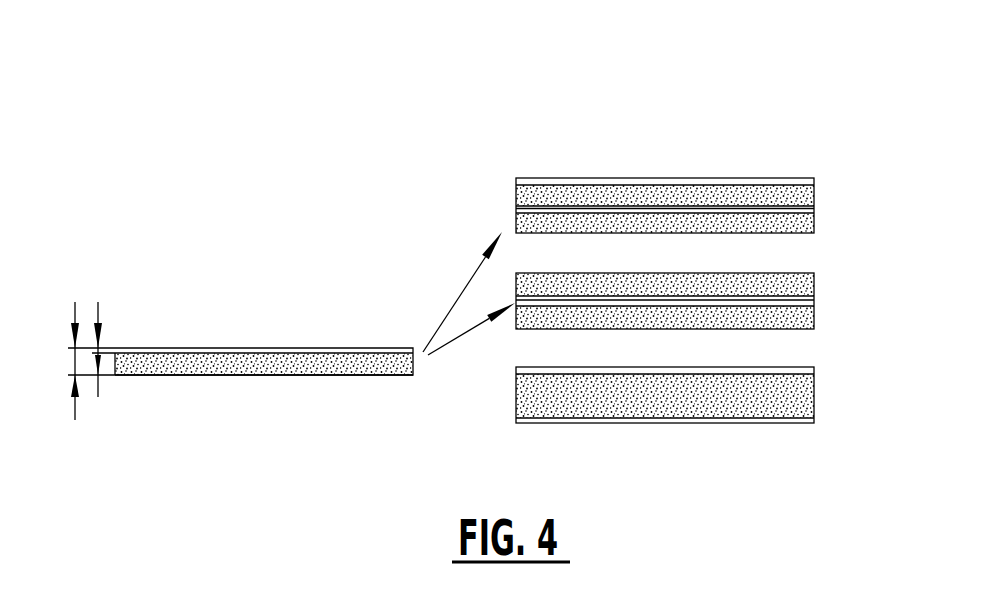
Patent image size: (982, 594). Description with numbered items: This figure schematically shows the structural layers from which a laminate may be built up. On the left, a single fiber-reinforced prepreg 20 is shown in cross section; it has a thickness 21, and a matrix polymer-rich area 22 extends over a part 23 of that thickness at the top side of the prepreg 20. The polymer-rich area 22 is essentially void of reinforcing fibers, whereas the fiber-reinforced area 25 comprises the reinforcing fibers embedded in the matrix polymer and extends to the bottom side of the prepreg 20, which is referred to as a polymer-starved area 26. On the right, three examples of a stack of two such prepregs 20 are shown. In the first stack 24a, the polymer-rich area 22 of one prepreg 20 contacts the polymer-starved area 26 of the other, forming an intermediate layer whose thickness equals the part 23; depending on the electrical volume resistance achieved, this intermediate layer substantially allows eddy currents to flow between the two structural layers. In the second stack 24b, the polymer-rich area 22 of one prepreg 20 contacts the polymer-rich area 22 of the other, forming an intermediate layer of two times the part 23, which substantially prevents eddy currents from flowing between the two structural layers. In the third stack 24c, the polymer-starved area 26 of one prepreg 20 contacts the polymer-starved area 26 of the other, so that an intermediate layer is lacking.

The fiber-reinforced prepreg 20 is at (122, 413).
The thickness 21 is at (74, 357).
The matrix polymer-rich area 22 is at (347, 348).
The part of the thickness 23 is at (98, 312).
The first stack 24a is at (844, 131).
The second stack 24b is at (848, 254).
The third stack 24c is at (844, 341).
The fiber-reinforced area 25 is at (250, 367).
The polymer-starved area 26 is at (200, 374).